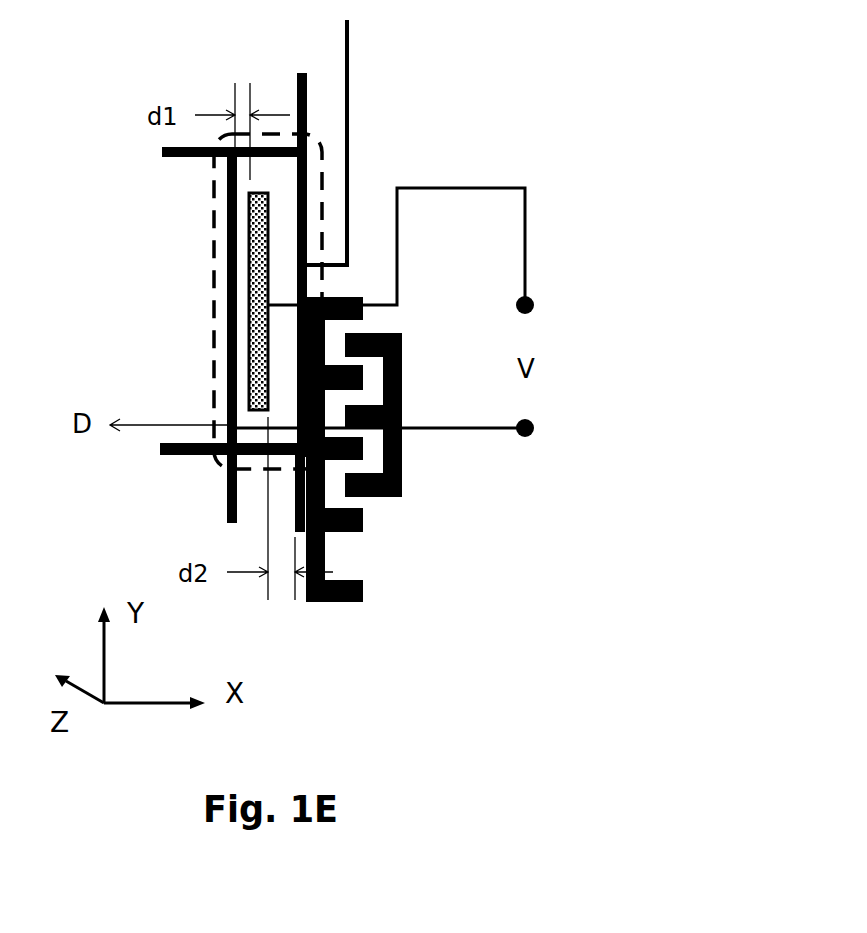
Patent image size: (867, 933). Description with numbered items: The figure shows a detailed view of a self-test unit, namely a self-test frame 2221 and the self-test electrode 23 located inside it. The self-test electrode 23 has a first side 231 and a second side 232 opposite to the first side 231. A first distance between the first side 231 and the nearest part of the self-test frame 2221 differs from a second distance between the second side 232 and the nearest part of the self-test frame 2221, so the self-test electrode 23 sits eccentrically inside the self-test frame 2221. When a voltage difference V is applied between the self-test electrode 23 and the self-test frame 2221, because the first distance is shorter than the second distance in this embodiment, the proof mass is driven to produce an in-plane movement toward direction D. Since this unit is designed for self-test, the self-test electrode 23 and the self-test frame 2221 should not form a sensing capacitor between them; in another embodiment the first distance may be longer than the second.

The self-test electrode 23 is at (253, 257).
The first side 231 is at (250, 303).
The second side 232 is at (272, 248).
The self-test frame 2221 is at (322, 170).